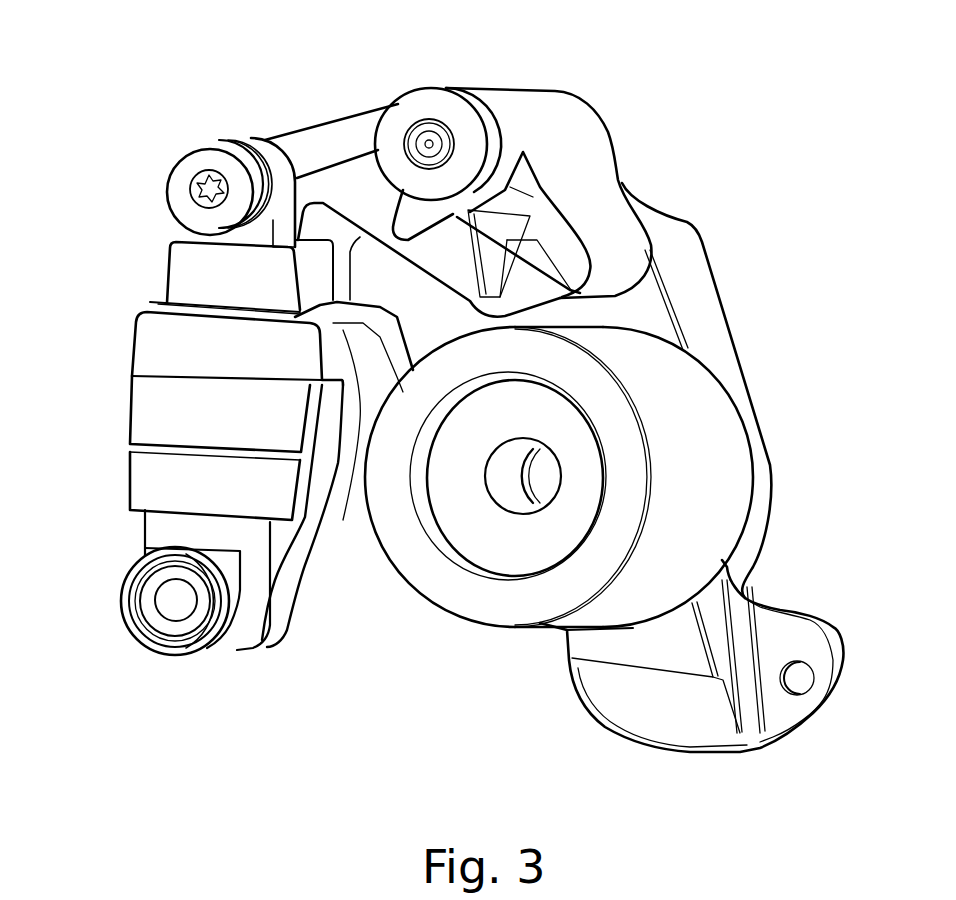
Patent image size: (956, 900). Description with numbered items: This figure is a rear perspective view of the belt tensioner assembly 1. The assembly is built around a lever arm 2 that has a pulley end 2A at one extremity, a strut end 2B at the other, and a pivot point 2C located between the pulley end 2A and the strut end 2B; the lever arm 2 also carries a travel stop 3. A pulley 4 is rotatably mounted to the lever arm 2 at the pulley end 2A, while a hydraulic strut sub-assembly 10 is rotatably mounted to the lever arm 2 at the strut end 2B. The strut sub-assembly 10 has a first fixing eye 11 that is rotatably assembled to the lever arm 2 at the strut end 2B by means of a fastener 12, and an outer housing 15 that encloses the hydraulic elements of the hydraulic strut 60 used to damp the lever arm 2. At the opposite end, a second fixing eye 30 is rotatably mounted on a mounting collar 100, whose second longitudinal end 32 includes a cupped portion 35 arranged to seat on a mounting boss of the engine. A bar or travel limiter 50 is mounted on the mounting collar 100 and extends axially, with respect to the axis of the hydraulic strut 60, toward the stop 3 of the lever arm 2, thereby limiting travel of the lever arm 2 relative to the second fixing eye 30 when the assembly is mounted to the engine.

The belt tensioner assembly 1 is at (690, 88).
The lever arm 2 is at (567, 107).
The pulley end 2A is at (637, 643).
The strut end 2B is at (300, 133).
The pivot point 2C is at (428, 100).
The travel stop 3 is at (345, 525).
The pulley 4 is at (703, 460).
The hydraulic strut sub-assembly 10 is at (130, 376).
The first fixing eye 11 is at (263, 150).
The fastener 12 is at (190, 163).
The outer housing 15 is at (140, 420).
The second fixing eye 30 is at (227, 647).
The second longitudinal end 32 is at (120, 598).
The cupped portion 35 is at (157, 622).
The travel limiter 50 is at (283, 580).
The hydraulic strut 60 is at (160, 473).
The mounting collar 100 is at (173, 635).